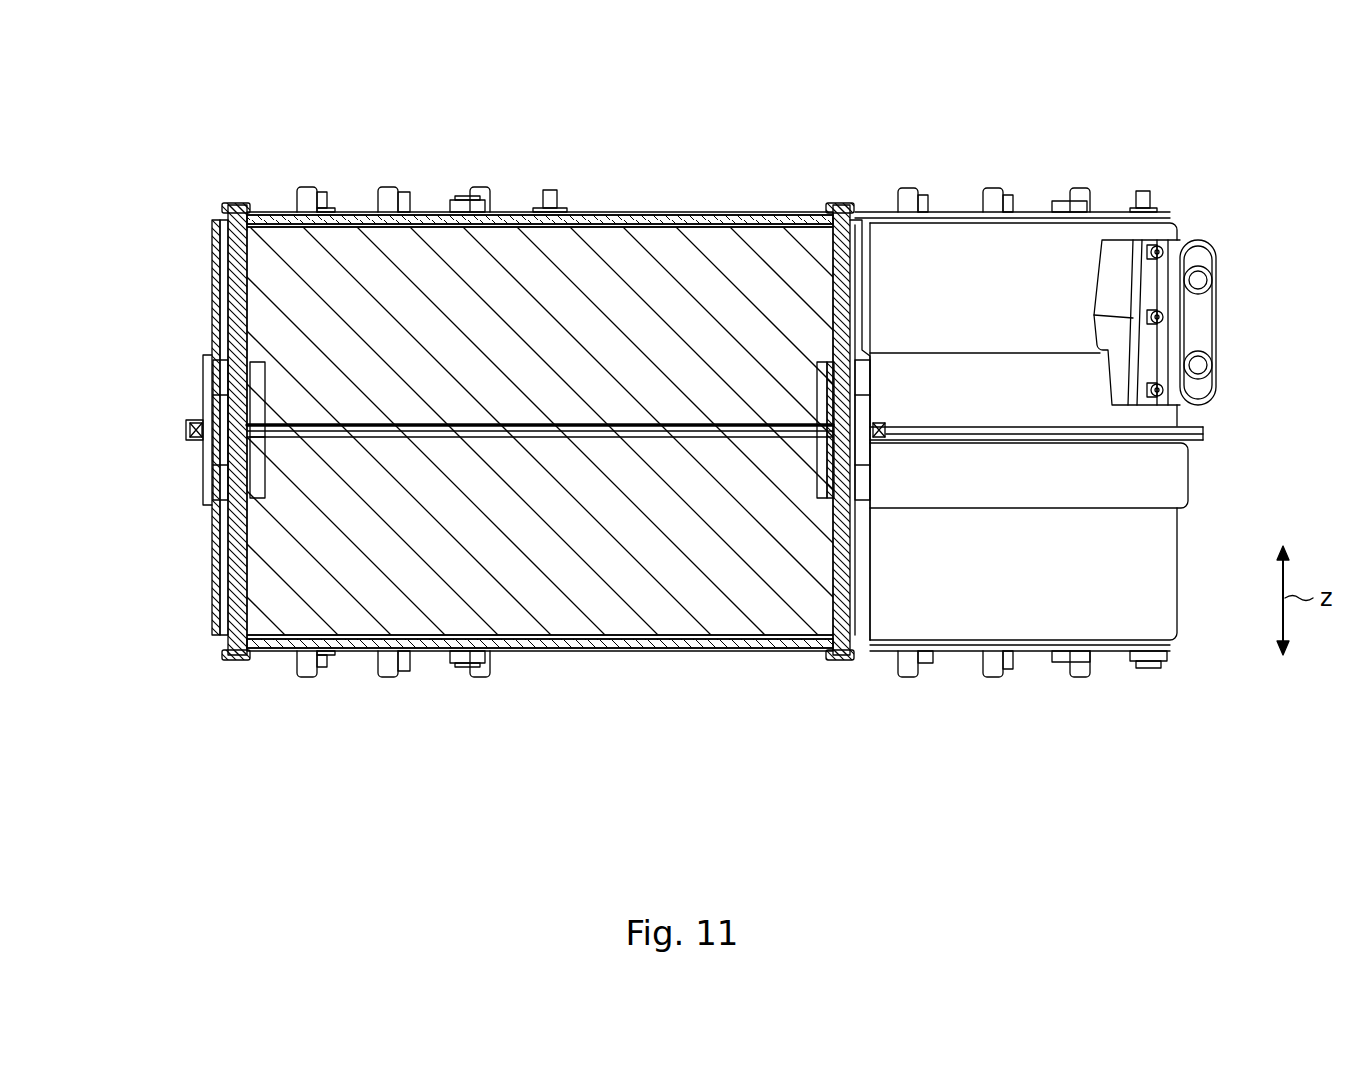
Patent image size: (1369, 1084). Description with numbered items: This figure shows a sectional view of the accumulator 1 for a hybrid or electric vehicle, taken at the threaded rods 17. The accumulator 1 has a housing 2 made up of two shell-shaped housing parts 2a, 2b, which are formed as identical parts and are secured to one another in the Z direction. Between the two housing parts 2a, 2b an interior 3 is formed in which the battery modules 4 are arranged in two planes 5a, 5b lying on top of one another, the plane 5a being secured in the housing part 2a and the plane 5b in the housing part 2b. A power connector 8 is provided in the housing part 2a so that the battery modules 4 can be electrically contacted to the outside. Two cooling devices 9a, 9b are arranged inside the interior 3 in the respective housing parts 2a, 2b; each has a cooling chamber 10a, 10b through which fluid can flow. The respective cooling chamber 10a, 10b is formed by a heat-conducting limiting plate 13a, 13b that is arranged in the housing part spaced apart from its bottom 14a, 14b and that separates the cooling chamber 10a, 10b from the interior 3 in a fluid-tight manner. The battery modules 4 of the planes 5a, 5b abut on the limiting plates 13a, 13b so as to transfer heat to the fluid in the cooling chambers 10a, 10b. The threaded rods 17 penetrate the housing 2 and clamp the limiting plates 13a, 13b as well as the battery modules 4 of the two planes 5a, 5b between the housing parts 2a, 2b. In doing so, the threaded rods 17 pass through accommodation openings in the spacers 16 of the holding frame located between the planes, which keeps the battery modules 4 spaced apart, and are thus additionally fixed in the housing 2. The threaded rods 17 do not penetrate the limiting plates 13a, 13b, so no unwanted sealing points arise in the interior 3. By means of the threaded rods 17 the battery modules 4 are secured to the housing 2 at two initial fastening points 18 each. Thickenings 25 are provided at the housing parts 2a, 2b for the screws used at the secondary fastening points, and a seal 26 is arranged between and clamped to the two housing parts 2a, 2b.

The accumulator 1 is at (1262, 178).
The housing 2 is at (510, 432).
The housing part 2a is at (203, 298).
The housing part 2b is at (203, 575).
The interior 3 is at (512, 260).
The battery modules 4 is at (1045, 432).
The plane 5a is at (805, 283).
The plane 5b is at (805, 568).
The power connector 8 is at (1205, 318).
The cooling device 9a is at (540, 136).
The cooling device 9b is at (540, 728).
The cooling chamber 10a is at (681, 167).
The cooling chamber 10b is at (657, 660).
The limiting plate 13a is at (695, 226).
The limiting plate 13b is at (695, 640).
The bottom 14a is at (603, 226).
The bottom 14b is at (560, 652).
The spacers 16 is at (225, 378).
The threaded rods 17 is at (230, 540).
The initial fastening points 18 is at (237, 183).
The thickenings 25 is at (390, 196).
The seal 26 is at (190, 430).